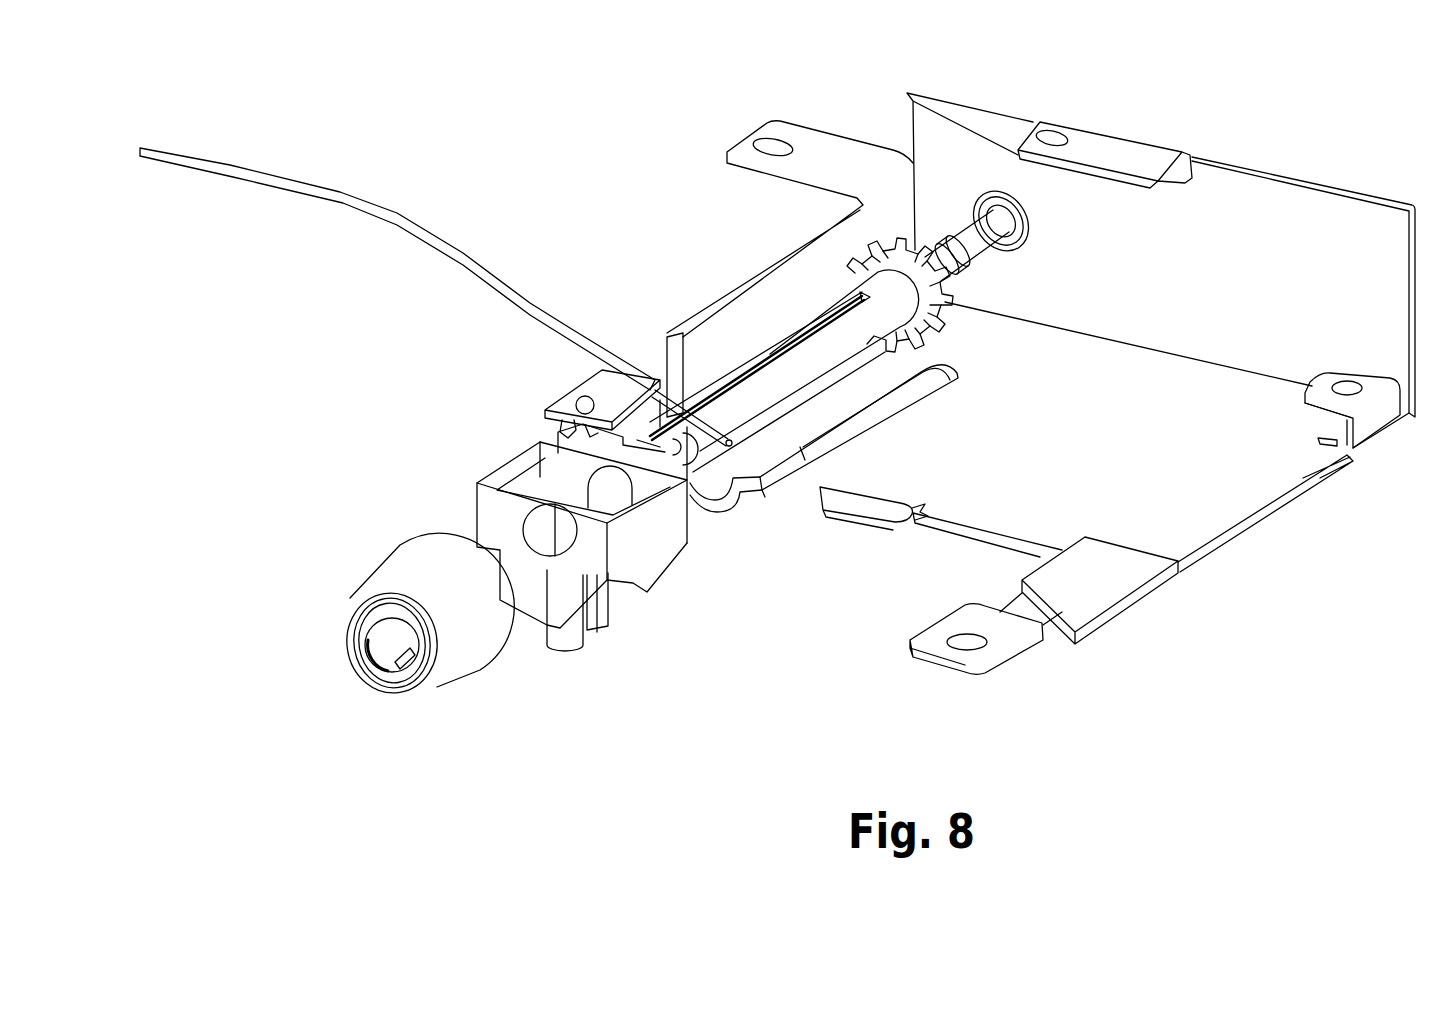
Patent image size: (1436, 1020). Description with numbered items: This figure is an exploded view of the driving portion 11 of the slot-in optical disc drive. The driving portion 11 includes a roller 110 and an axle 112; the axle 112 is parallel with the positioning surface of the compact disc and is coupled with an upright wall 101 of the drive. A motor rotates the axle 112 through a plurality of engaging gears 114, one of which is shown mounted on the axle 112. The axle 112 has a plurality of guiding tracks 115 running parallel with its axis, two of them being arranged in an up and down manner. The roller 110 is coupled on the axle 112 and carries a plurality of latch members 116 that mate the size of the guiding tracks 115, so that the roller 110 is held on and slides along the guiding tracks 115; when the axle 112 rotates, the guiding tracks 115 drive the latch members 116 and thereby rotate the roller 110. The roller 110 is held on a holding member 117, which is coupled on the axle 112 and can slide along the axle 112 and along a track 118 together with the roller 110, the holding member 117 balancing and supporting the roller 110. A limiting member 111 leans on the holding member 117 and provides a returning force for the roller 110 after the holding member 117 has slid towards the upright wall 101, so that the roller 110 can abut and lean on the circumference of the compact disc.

The driving portion 11 is at (363, 452).
The upright wall 101 is at (1305, 202).
The roller 110 is at (453, 655).
The limiting member 111 is at (340, 195).
The axle 112 is at (892, 298).
The engaging gears 114 is at (888, 247).
The guiding tracks 115 is at (758, 353).
The latch members 116 is at (392, 667).
The holding member 117 is at (647, 540).
The track 118 is at (792, 483).